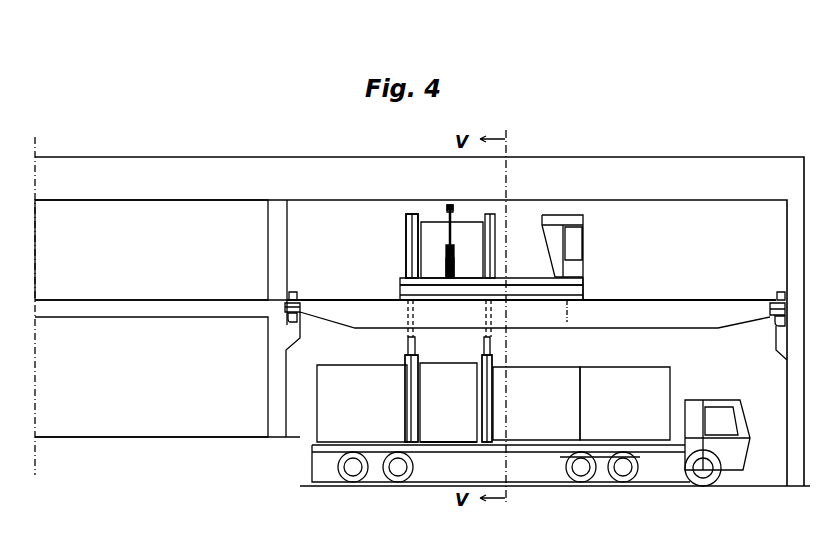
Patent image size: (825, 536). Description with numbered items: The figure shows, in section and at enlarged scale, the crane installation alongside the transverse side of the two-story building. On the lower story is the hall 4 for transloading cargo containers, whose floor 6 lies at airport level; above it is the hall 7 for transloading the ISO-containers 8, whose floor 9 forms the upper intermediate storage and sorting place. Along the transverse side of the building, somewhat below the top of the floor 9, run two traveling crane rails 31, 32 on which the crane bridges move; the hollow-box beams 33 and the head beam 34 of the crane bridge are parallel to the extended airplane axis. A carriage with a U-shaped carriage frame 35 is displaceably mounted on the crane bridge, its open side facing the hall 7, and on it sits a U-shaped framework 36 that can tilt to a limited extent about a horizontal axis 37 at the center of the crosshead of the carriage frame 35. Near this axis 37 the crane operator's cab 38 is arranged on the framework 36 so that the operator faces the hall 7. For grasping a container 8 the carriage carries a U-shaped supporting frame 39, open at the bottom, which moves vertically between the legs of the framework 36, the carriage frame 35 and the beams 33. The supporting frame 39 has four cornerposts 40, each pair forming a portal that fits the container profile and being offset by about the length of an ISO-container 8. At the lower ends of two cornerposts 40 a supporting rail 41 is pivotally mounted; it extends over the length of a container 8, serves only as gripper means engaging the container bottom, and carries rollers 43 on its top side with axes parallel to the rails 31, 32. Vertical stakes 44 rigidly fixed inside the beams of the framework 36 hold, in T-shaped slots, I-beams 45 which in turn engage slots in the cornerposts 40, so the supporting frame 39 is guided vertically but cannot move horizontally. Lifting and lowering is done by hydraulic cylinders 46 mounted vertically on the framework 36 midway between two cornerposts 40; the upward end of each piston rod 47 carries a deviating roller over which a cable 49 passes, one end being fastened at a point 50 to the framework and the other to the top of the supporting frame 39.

The hall 4 is at (157, 361).
The floor 6 is at (80, 437).
The hall 7 is at (161, 254).
The ISO-container 8 is at (437, 249).
The floor 9 is at (94, 300).
The traveling crane rail 31 is at (296, 318).
The traveling crane rail 32 is at (778, 321).
The beam 33 is at (718, 328).
The head beam 34 is at (300, 296).
The carriage frame 35 is at (583, 292).
The framework 36 is at (522, 283).
The horizontal axis 37 is at (568, 318).
The crane operator's cab 38 is at (583, 221).
The supporting frame 39 is at (406, 225).
The cornerpost 40 is at (407, 255).
The supporting rail 41 is at (458, 445).
The roller 43 is at (453, 438).
The stake 44 is at (407, 323).
The I-beam 45 is at (495, 228).
The cylinder 46 is at (454, 264).
The piston rod 47 is at (452, 238).
The cable 49 is at (455, 212).
The point 50 is at (446, 266).